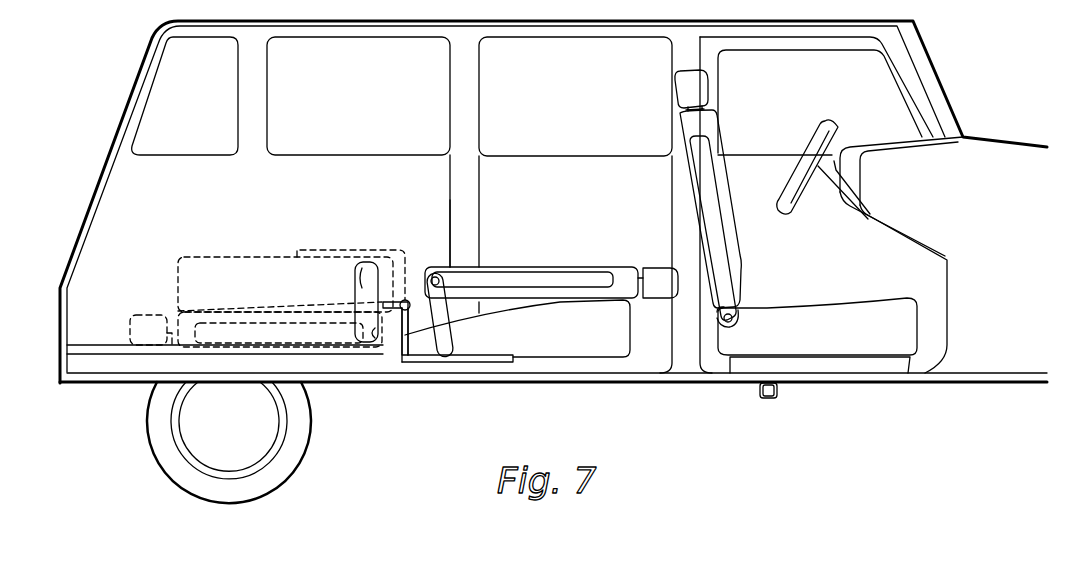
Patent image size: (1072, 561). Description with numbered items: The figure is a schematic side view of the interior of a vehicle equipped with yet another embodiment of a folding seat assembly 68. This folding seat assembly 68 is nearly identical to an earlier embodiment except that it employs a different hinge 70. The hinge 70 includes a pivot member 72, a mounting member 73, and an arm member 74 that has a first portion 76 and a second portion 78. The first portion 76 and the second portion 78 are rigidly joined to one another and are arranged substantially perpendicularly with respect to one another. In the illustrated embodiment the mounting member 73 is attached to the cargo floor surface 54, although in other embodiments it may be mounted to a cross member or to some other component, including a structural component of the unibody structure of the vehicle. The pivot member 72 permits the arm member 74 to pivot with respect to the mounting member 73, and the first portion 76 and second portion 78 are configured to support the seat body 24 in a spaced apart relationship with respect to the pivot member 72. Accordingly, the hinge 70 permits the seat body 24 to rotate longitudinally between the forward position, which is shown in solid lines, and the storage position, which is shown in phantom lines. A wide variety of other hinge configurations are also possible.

The seat body 24 is at (602, 262).
The cargo floor surface 54 is at (119, 343).
The folding seat assembly 68 is at (437, 219).
The hinge 70 is at (389, 366).
The pivot member 72 is at (407, 299).
The mounting member 73 is at (388, 302).
The arm member 74 is at (465, 368).
The first portion 76 is at (440, 333).
The second portion 78 is at (423, 358).